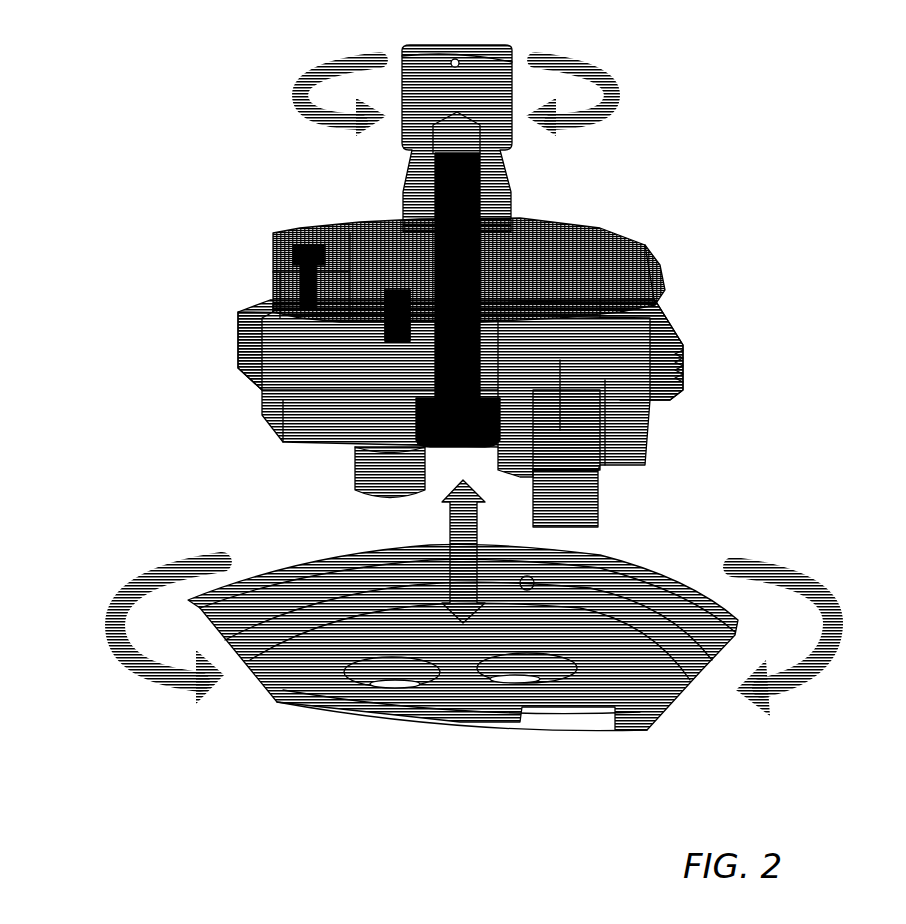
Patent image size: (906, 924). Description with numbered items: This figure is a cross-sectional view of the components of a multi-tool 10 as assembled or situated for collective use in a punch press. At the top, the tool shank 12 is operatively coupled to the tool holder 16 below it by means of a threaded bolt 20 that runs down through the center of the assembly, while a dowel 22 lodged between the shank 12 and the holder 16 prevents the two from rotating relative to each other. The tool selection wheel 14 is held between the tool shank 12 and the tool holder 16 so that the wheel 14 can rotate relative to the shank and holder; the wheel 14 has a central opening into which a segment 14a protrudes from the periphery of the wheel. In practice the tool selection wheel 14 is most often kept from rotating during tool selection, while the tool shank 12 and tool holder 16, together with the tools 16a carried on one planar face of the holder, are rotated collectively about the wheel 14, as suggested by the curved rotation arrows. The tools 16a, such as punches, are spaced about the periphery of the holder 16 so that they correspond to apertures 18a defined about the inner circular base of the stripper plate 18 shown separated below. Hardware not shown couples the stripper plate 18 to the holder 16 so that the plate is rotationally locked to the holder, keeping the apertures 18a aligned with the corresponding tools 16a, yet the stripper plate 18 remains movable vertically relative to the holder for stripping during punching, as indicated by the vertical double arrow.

The multi-tool 10 is at (113, 724).
The tool shank 12 is at (510, 185).
The tool selection wheel 14 is at (685, 357).
The segment 14a is at (565, 398).
The tool holder 16 is at (277, 418).
The tools 16a is at (358, 470).
The stripper plate 18 is at (325, 705).
The apertures 18a is at (508, 690).
The threaded bolt 20 is at (483, 353).
The dowel 22 is at (395, 285).